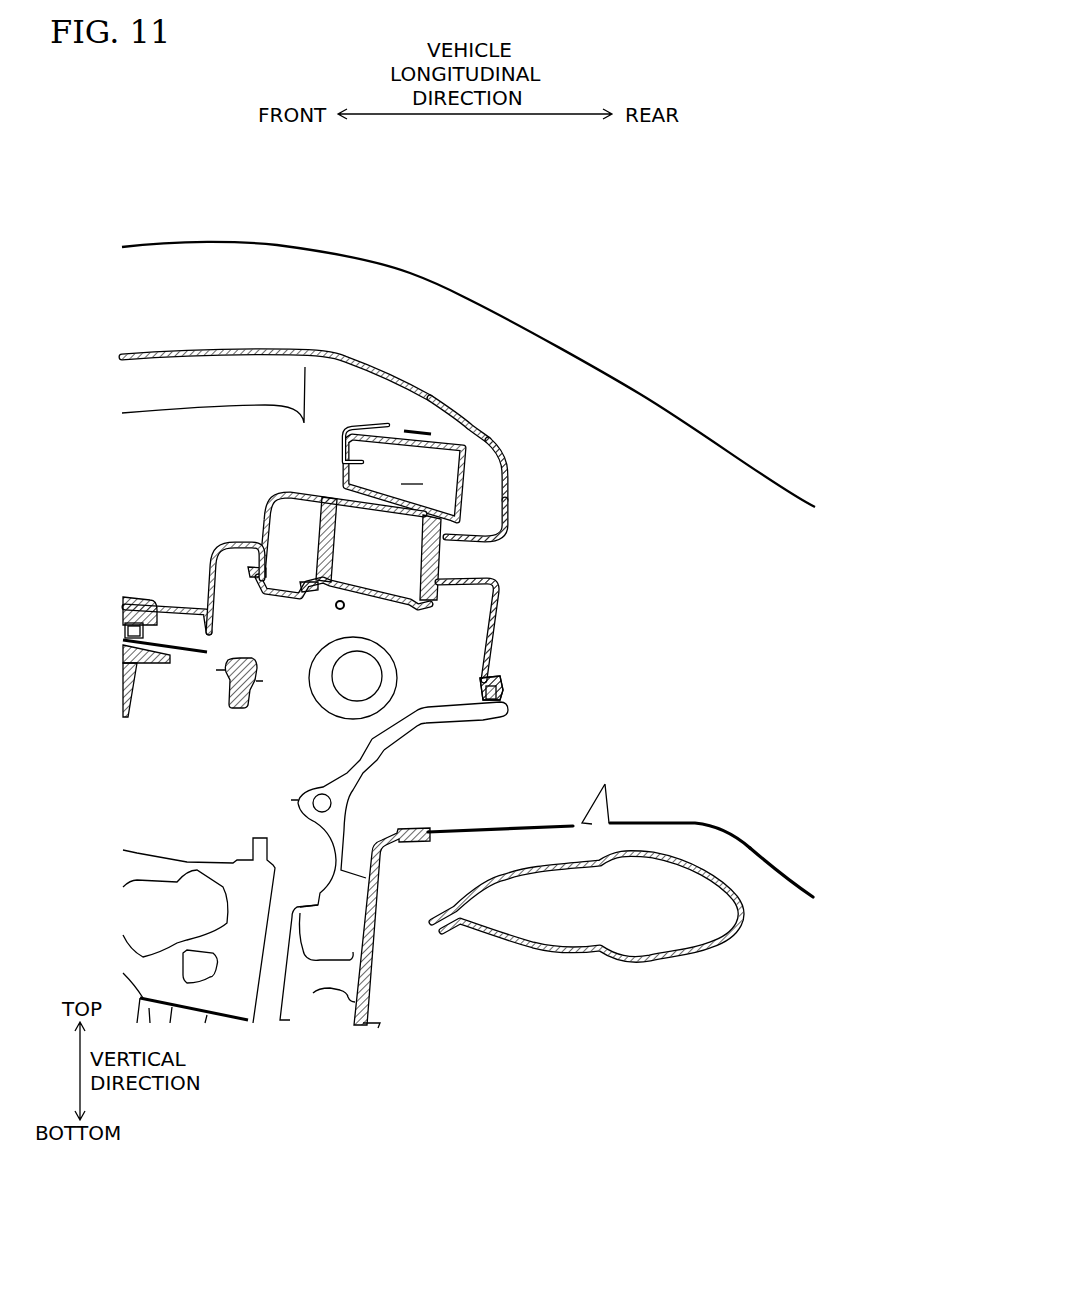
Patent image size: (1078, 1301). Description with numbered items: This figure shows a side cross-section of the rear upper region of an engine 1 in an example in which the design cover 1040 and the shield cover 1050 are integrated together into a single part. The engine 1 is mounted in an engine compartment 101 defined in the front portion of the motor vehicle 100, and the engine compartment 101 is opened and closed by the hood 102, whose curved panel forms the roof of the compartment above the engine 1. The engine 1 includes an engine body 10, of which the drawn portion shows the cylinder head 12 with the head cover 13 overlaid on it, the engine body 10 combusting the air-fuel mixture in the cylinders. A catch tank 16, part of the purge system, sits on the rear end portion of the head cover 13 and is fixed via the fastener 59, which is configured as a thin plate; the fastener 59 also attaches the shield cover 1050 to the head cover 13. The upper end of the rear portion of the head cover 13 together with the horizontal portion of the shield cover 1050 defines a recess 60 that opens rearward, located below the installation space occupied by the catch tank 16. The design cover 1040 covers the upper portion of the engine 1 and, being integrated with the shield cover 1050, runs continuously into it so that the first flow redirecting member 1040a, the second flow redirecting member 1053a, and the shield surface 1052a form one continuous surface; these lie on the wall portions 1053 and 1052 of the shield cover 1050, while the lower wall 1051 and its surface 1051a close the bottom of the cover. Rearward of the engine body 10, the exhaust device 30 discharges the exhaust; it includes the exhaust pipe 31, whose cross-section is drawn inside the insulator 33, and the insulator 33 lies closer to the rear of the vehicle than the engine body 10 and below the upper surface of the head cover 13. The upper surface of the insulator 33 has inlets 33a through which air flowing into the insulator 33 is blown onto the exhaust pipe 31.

The engine 1 is at (691, 589).
The engine body 10 is at (444, 727).
The cylinder head 12 is at (388, 749).
The head cover 13 is at (223, 561).
The catch tank 16 is at (348, 478).
The exhaust device 30 is at (710, 819).
The exhaust pipe 31 is at (722, 937).
The insulator 33 is at (767, 850).
The inlets 33a is at (608, 790).
The fastener 59 is at (345, 440).
The recess 60 is at (483, 570).
The motor vehicle 100 is at (687, 291).
The engine compartment 101 is at (734, 684).
The hood 102 is at (410, 271).
The design cover 1040 is at (192, 347).
The first flow redirecting member 1040a is at (355, 378).
The shield cover 1050 is at (512, 538).
The lower wall 1051 is at (448, 657).
The lower wall surface 1051a is at (446, 583).
The rear wall 1052 is at (563, 519).
The shield surface 1052a is at (503, 507).
The upper wall 1053 is at (580, 470).
The second flow redirecting member 1053a is at (502, 455).